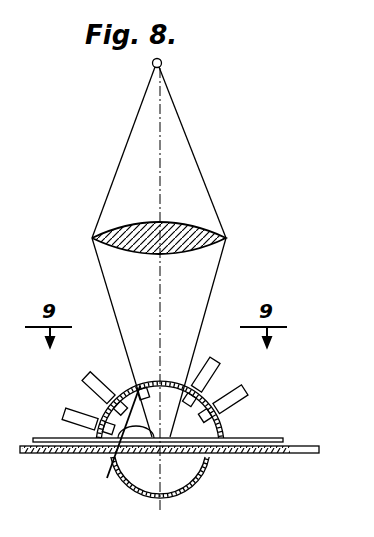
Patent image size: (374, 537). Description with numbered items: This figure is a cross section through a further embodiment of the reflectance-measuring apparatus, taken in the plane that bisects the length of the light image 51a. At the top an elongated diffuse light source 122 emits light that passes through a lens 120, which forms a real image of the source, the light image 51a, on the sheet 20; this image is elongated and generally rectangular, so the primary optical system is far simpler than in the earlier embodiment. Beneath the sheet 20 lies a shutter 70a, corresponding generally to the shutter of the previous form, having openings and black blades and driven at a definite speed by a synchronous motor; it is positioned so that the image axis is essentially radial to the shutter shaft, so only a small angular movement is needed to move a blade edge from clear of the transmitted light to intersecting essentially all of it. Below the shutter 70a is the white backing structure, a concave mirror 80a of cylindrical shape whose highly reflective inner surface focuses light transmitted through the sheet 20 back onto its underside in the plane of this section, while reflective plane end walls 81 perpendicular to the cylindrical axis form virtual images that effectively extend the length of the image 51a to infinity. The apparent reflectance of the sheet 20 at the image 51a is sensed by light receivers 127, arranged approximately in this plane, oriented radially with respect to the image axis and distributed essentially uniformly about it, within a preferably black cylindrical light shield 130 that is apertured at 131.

The elongated diffuse light source 122 is at (162, 63).
The lens 120 is at (214, 229).
The light receivers 127 is at (89, 406).
The light shield 130 is at (226, 382).
The aperture 131 is at (139, 382).
The sheet 20 is at (283, 438).
The shutter 70a is at (301, 462).
The light image 51a is at (115, 472).
The reflective plane end walls 81 is at (143, 477).
The concave cylindrical mirror 80a is at (206, 487).